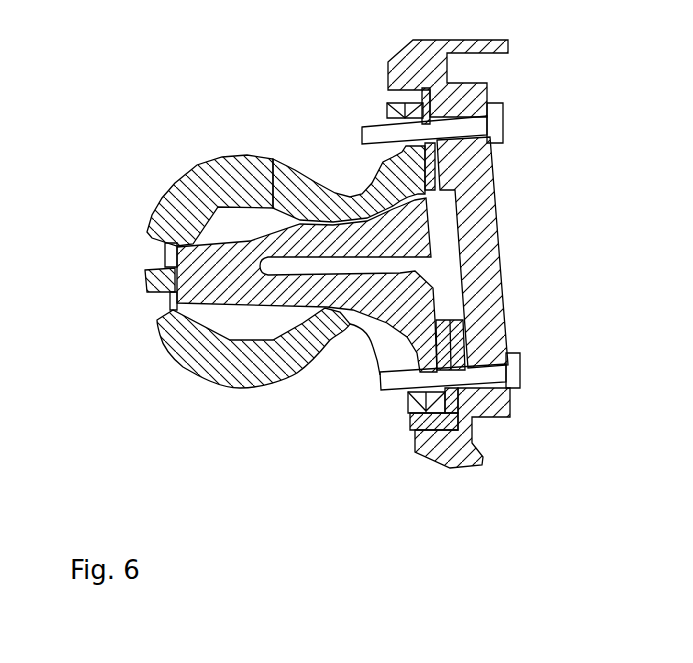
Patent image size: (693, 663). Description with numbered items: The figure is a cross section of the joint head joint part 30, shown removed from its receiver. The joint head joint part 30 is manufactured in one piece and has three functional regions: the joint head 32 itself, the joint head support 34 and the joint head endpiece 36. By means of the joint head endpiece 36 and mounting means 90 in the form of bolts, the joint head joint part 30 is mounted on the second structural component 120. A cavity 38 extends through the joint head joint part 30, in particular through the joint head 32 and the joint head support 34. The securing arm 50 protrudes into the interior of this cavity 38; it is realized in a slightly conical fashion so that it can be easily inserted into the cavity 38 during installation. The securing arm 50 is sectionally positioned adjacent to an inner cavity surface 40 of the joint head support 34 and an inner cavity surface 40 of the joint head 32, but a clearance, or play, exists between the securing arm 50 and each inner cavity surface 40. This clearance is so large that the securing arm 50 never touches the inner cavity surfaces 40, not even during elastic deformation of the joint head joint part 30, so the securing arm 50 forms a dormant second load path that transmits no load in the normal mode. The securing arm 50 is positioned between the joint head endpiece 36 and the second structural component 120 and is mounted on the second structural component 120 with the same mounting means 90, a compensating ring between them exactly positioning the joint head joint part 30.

The joint head joint part 30 is at (327, 392).
The joint head 32 is at (203, 189).
The joint head support 34 is at (348, 198).
The joint head endpiece 36 is at (392, 118).
The cavity 38 is at (255, 325).
The inner cavity surface 40 is at (183, 302).
The securing arm 50 is at (321, 313).
The mounting means 90 is at (487, 121).
The second structural component 120 is at (497, 268).